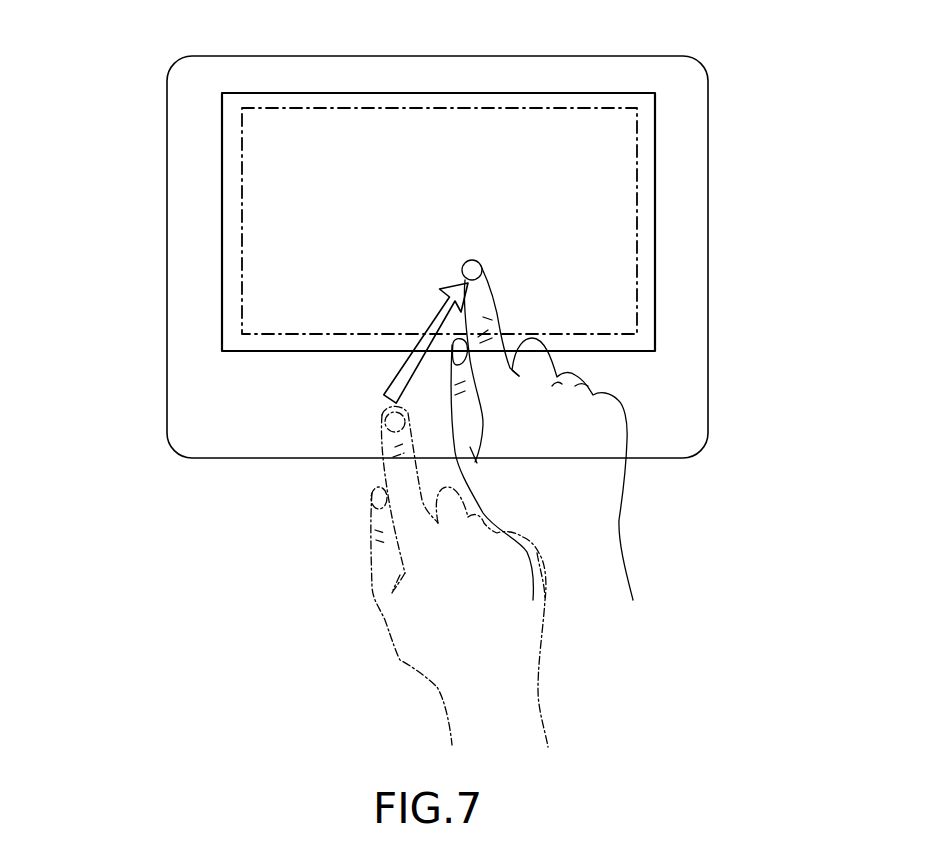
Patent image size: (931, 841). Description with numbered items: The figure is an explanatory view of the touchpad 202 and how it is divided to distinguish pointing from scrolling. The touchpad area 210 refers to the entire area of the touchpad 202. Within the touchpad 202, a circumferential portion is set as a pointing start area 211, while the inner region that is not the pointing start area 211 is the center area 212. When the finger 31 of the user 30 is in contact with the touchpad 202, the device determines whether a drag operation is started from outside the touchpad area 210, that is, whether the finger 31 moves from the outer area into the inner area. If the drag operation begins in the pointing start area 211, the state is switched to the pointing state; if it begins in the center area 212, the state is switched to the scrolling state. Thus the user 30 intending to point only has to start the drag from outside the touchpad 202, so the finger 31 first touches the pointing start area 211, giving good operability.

The touchpad 202 is at (437, 230).
The touchpad area 210 is at (437, 222).
The pointing start area 211 is at (643, 172).
The center area 212 is at (260, 213).
The user 30 is at (568, 503).
The finger 31 is at (497, 317).